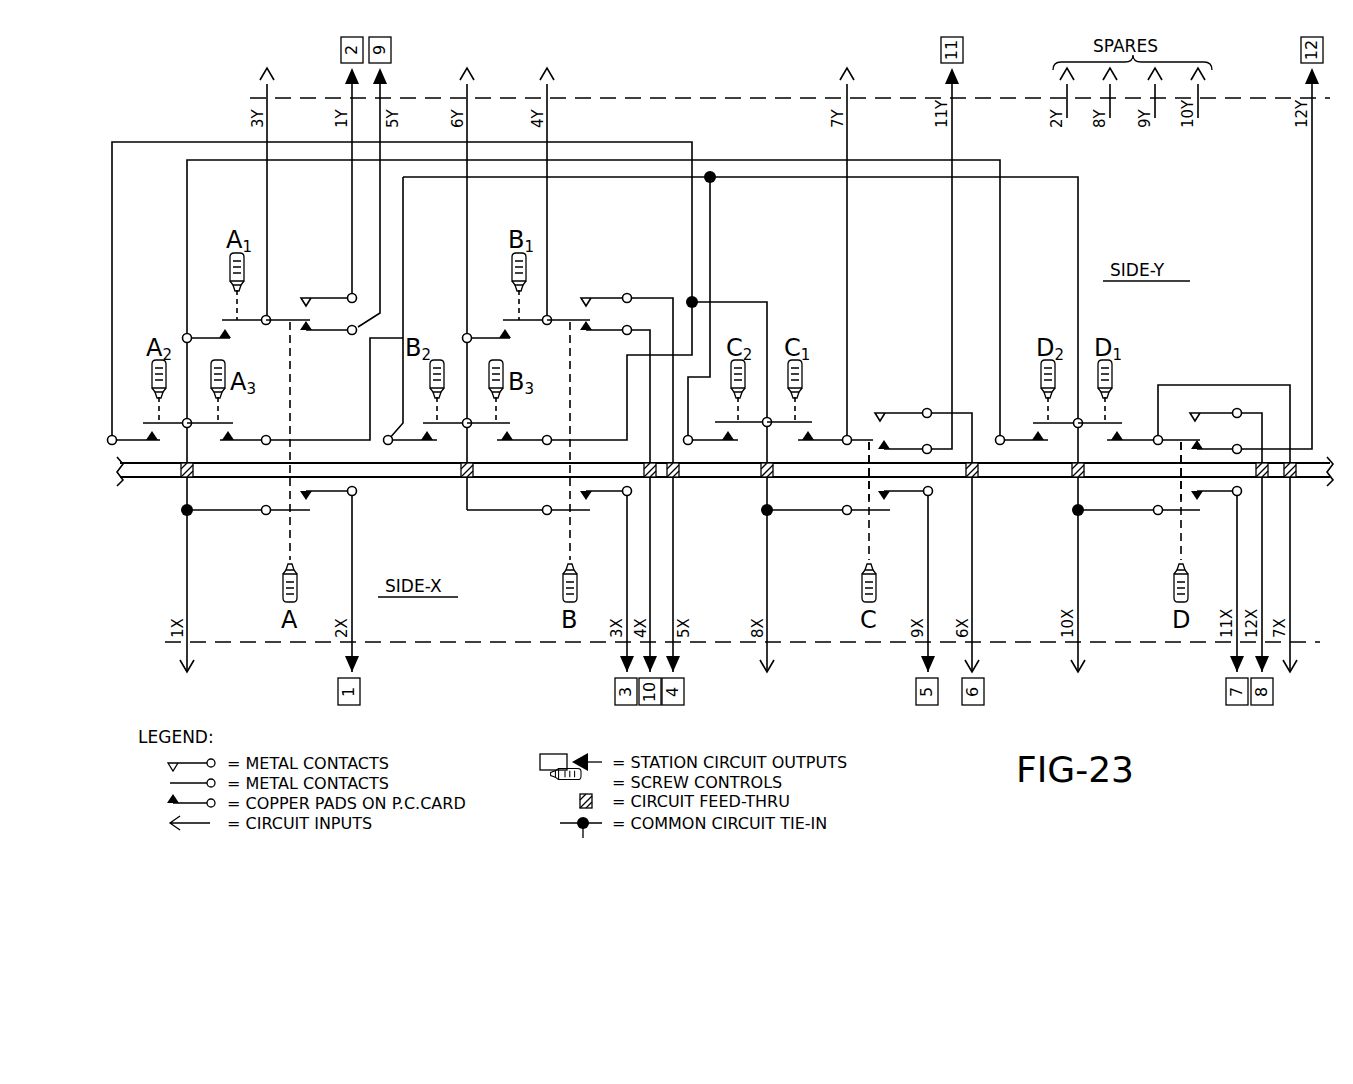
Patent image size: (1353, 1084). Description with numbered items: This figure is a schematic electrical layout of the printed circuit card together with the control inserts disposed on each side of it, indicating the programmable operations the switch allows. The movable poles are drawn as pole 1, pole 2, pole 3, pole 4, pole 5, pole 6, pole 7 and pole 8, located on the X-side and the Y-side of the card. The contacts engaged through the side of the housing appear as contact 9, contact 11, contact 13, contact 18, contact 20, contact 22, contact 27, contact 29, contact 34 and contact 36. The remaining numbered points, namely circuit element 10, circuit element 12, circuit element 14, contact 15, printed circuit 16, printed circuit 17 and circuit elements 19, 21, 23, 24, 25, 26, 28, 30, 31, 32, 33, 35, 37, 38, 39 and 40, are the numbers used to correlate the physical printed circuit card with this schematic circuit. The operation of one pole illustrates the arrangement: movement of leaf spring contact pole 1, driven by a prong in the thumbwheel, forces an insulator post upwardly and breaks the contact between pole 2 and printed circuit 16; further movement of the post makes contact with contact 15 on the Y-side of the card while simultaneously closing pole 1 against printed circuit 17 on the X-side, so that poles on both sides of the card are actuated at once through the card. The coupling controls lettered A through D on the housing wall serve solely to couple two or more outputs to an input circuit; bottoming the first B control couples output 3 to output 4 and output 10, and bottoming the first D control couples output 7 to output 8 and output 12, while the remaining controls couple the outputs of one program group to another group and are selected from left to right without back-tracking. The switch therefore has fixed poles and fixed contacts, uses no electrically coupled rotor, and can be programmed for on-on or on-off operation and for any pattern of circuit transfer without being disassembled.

The leaf spring contact pole 1 is at (246, 519).
The movable pole 2 is at (288, 308).
The movable pole 3 is at (529, 521).
The movable pole 4 is at (568, 308).
The movable pole 5 is at (826, 519).
The movable pole 6 is at (862, 458).
The movable pole 7 is at (1137, 519).
The movable pole 8 is at (1175, 458).
The contact 9 is at (167, 413).
The output 10 is at (136, 446).
The contact 11 is at (242, 311).
The output 12 is at (219, 342).
The contact 13 is at (216, 411).
The printed circuit card circuit element 14 is at (245, 446).
The contact 15 is at (329, 290).
The printed circuit 16 is at (328, 336).
The printed circuit 17 is at (328, 499).
The contact 18 is at (445, 413).
The printed circuit card circuit element 19 is at (412, 446).
The contact 20 is at (523, 311).
The printed circuit card circuit element 21 is at (499, 342).
The contact 22 is at (495, 411).
The printed circuit card circuit element 23 is at (524, 446).
The printed circuit card circuit element 24 is at (606, 290).
The printed circuit card circuit element 25 is at (606, 336).
The printed circuit card circuit element 26 is at (606, 499).
The contact 27 is at (742, 412).
The printed circuit card circuit element 28 is at (712, 446).
The contact 29 is at (792, 410).
The printed circuit card circuit element 30 is at (835, 446).
The printed circuit card circuit element 31 is at (902, 405).
The printed circuit card circuit element 32 is at (905, 439).
The printed circuit card circuit element 33 is at (905, 499).
The contact 34 is at (1054, 413).
The printed circuit card circuit element 35 is at (1023, 446).
The contact 36 is at (1104, 410).
The printed circuit card circuit element 37 is at (1152, 446).
The printed circuit card circuit element 38 is at (1213, 405).
The printed circuit card circuit element 39 is at (1216, 439).
The printed circuit card circuit element 40 is at (1216, 499).